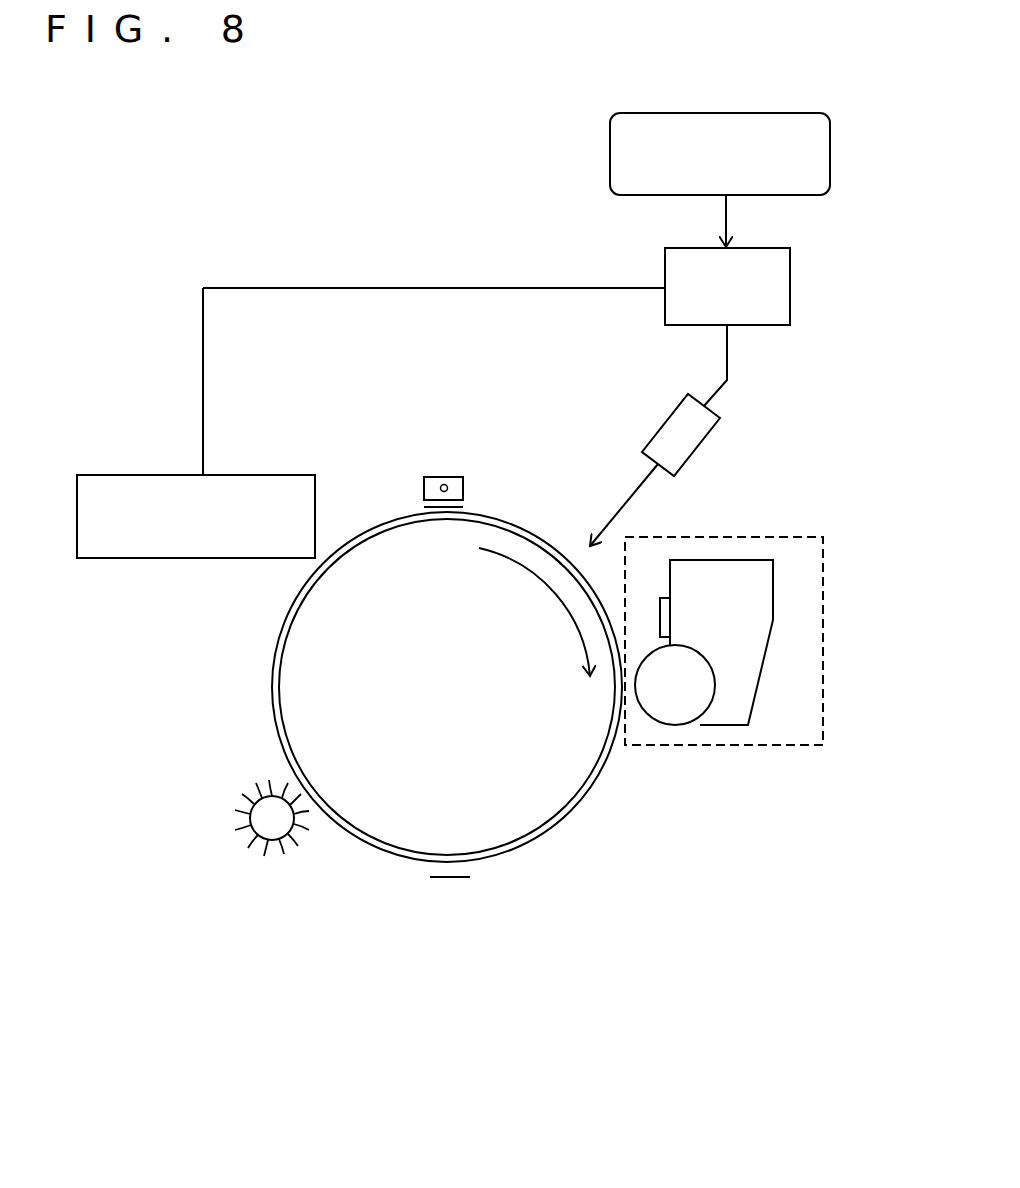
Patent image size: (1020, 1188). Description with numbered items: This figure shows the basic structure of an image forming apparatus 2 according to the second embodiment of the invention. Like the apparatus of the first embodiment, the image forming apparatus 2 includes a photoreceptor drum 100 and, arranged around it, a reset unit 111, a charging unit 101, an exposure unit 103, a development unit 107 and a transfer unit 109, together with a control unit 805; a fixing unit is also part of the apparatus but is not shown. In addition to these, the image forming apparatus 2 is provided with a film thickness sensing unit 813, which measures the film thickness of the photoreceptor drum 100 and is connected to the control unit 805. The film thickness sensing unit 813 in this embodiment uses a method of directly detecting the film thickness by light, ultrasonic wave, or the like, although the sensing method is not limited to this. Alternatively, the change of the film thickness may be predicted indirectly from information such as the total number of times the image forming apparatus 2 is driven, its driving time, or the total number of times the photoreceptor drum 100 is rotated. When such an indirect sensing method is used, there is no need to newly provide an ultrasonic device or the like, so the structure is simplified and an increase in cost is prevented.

The image forming apparatus 2 is at (300, 165).
The control unit 805 is at (790, 272).
The exposure unit 103 is at (700, 450).
The development unit 107 is at (823, 605).
The photoreceptor drum 100 is at (582, 812).
The charging unit 101 is at (447, 470).
The film thickness sensing unit 813 is at (160, 558).
The reset unit 111 is at (258, 855).
The transfer unit 109 is at (451, 885).